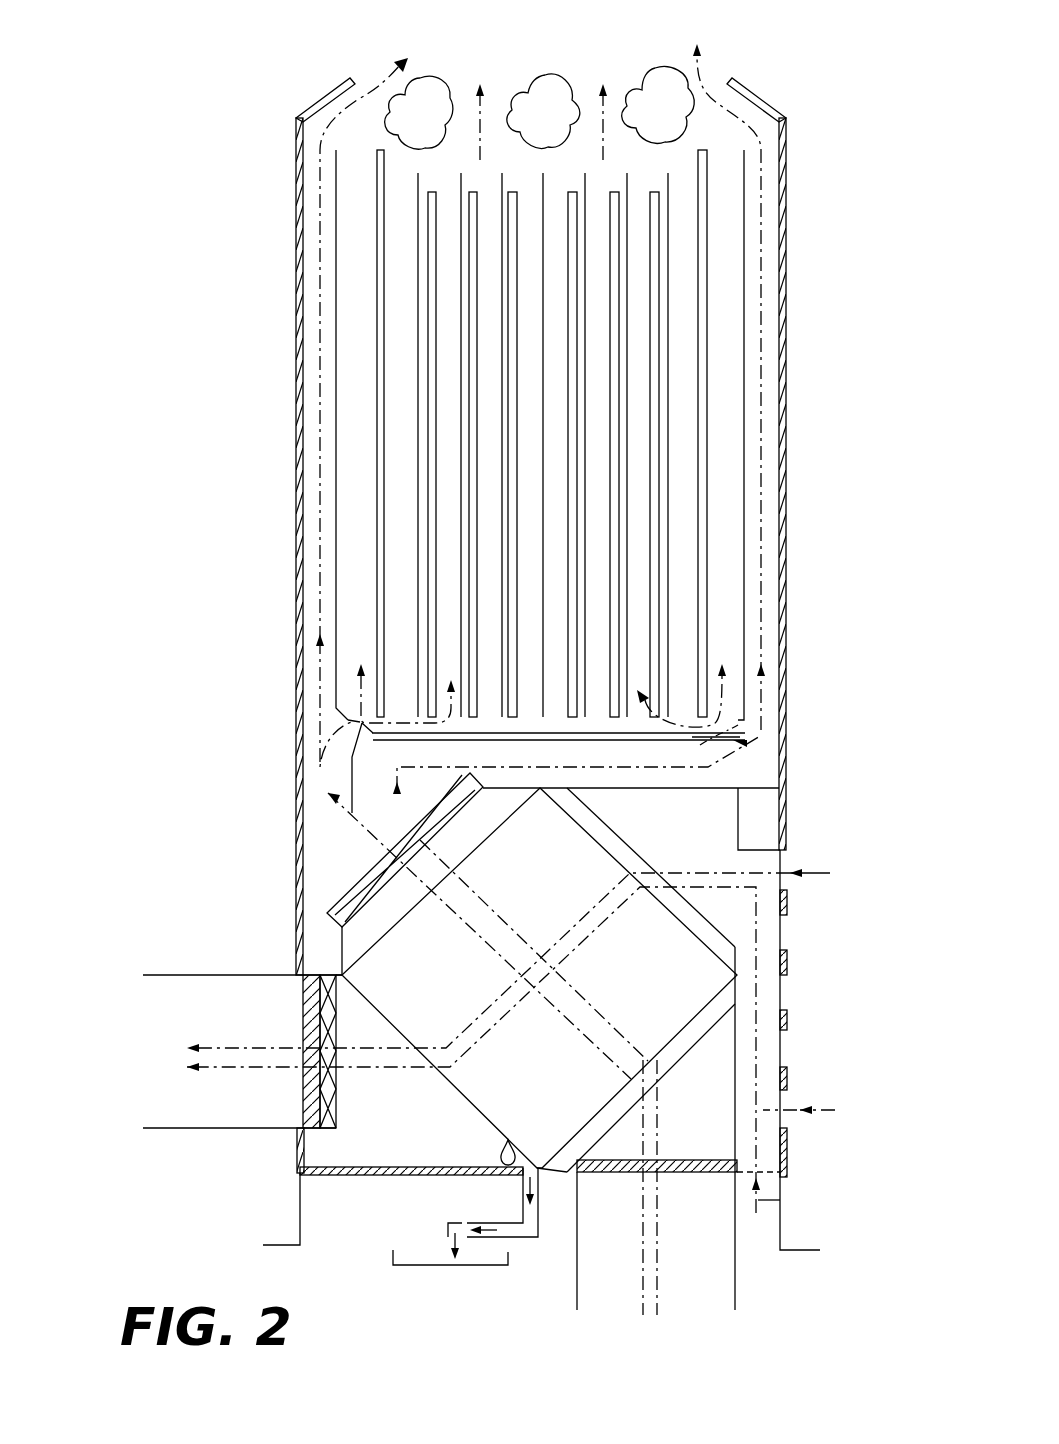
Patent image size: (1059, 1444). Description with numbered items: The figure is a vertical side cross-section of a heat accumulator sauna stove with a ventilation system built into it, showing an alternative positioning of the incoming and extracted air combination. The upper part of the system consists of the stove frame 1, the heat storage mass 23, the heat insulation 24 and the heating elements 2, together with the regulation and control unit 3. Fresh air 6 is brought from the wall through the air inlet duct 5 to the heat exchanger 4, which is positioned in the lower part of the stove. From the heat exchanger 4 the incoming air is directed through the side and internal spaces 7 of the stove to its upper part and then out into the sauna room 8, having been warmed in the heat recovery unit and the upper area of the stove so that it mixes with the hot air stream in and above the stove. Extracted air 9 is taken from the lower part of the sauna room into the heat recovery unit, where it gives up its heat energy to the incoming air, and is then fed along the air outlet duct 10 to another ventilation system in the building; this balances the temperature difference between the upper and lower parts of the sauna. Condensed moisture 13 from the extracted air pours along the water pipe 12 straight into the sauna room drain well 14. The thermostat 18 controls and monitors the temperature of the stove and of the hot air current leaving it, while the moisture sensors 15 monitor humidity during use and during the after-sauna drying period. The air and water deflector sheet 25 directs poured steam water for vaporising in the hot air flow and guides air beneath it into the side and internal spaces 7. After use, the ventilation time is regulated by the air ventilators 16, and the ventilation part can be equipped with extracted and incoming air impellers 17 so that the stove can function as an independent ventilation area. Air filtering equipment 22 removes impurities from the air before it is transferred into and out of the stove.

The stove frame 1 is at (294, 132).
The heating element 2 is at (417, 205).
The regulation and control unit 3 is at (770, 833).
The heat exchanger 4 is at (470, 1100).
The air inlet duct 5 is at (700, 1240).
The fresh air 6 is at (643, 1270).
The side and internal spaces 7 is at (308, 248).
The sauna room 8 is at (380, 80).
The extracted air 9 is at (832, 873).
The air outlet duct 10 is at (713, 863).
The water pipe 12 is at (522, 1238).
The condensed moisture 13 is at (498, 1157).
The drain well 14 is at (392, 1255).
The moisture sensor 15 is at (742, 130).
The air ventilator 16 is at (298, 975).
The extracted and incoming air impellers 17 is at (323, 963).
The thermostat 18 is at (730, 68).
The air filtering equipment 22 is at (730, 957).
The heat storage mass 23 is at (638, 65).
The heat insulation 24 is at (380, 433).
The air and water deflector sheet 25 is at (323, 773).